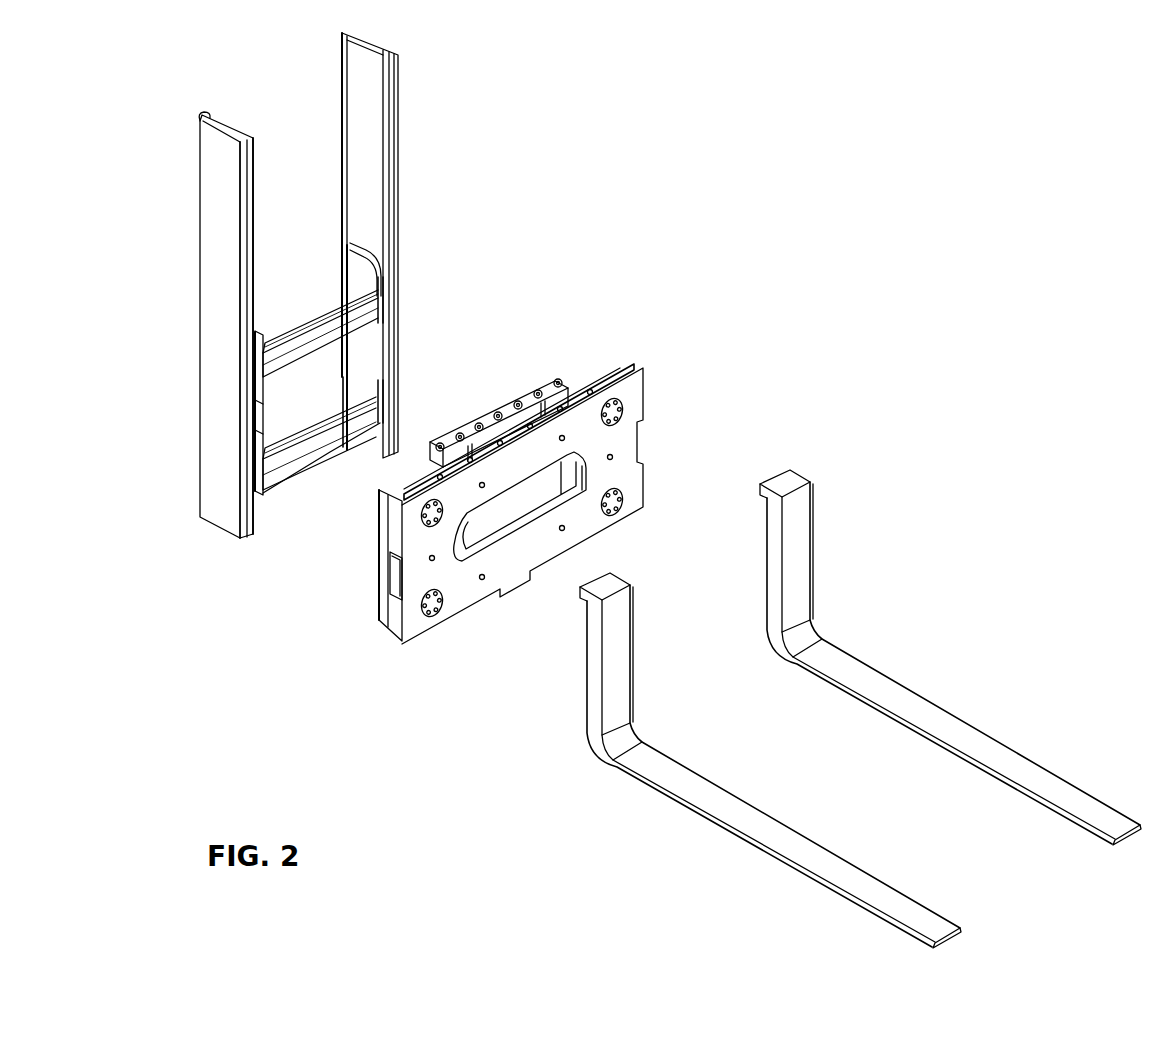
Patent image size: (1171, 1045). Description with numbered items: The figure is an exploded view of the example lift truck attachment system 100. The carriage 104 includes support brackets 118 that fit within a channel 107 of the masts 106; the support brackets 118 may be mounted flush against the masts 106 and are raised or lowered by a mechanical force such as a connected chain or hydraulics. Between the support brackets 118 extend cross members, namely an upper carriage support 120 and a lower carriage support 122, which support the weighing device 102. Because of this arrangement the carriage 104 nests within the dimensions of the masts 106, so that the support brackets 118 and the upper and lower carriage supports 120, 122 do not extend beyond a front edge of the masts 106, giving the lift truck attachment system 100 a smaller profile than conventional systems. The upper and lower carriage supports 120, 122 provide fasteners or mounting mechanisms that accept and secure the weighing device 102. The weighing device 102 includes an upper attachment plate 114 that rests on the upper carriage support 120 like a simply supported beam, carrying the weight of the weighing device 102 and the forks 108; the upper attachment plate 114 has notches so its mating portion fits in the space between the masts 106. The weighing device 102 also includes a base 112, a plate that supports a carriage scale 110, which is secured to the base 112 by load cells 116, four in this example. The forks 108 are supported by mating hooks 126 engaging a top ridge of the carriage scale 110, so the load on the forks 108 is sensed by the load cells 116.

The lift truck attachment system 100 is at (790, 138).
The weighing device 102 is at (657, 327).
The carriage 104 is at (330, 271).
The masts 106 is at (409, 95).
The channel 107 is at (364, 112).
The forks 108 is at (941, 695).
The carriage scale 110 is at (643, 370).
The base 112 is at (378, 588).
The upper attachment plate 114 is at (537, 376).
The load cells 116 is at (605, 518).
The support brackets 118 is at (376, 280).
The upper carriage support 120 is at (325, 314).
The lower carriage support 122 is at (332, 415).
The hook/attachment 126 is at (821, 466).